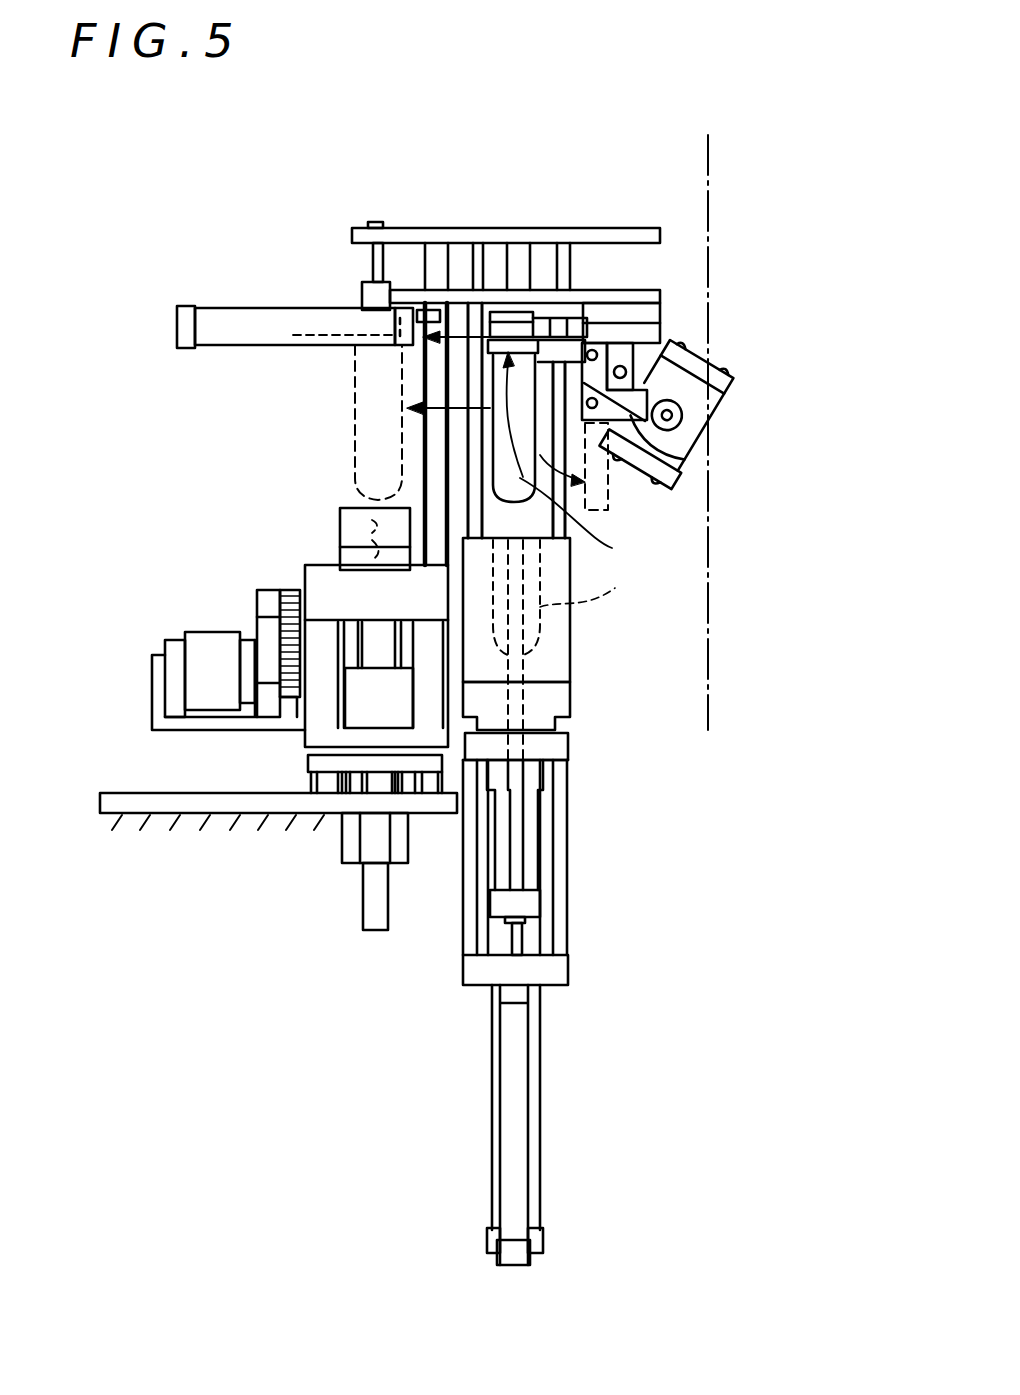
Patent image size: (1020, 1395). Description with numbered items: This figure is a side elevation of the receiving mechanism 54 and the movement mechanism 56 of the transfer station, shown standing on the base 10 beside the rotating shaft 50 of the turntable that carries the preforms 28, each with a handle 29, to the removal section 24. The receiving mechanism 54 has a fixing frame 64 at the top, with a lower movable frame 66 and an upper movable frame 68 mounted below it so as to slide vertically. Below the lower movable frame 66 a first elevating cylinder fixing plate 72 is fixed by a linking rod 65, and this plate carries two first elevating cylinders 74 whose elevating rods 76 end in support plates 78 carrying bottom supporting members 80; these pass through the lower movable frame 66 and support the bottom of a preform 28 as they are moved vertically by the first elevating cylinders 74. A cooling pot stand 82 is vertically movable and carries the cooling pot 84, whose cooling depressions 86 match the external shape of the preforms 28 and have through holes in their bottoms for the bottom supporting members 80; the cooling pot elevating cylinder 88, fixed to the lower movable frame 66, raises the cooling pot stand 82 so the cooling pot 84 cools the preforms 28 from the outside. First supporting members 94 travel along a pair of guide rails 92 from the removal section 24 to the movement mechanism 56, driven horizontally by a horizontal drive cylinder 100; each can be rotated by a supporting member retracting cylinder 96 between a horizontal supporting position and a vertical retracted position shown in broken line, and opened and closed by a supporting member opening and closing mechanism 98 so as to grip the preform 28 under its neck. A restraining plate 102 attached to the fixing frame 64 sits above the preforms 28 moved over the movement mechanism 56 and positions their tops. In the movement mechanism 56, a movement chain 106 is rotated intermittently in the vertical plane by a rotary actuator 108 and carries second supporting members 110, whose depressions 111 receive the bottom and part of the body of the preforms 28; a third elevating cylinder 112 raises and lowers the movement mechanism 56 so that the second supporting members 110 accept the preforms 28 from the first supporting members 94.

The base 10 is at (163, 815).
The removal section 24 is at (502, 108).
The preforms 28 is at (559, 434).
The handle 29 is at (450, 363).
The rotating shaft 50 is at (716, 172).
The receiving mechanism 54 is at (678, 270).
The movement mechanism 56 is at (295, 527).
The fixing frame 64 is at (614, 228).
The linking rod 65 is at (567, 856).
The lower movable frame 66 is at (568, 758).
The upper movable frame 68 is at (660, 300).
The first elevating cylinder fixing plate 72 is at (557, 973).
The first elevating cylinders 74 is at (522, 1140).
The elevating rods 76 is at (522, 940).
The support plates 78 is at (530, 907).
The bottom supporting members 80 is at (518, 830).
The cooling pot stand 82 is at (557, 748).
The cooling pot 84 is at (555, 702).
The cooling depressions 86 is at (557, 655).
The cooling pot elevating cylinder 88 is at (540, 1078).
The guide rails 92 is at (566, 312).
The first supporting members 94 is at (700, 442).
The supporting member retracting cylinder 96 is at (703, 396).
The supporting member opening and closing mechanism 98 is at (585, 382).
The horizontal drive cylinder 100 is at (240, 318).
The restraining plate 102 is at (377, 297).
The movement chain 106 is at (353, 643).
The rotary actuator 108 is at (205, 675).
The second supporting members 110 is at (340, 508).
The depressions 111 is at (360, 537).
The third elevating cylinder 112 is at (353, 850).